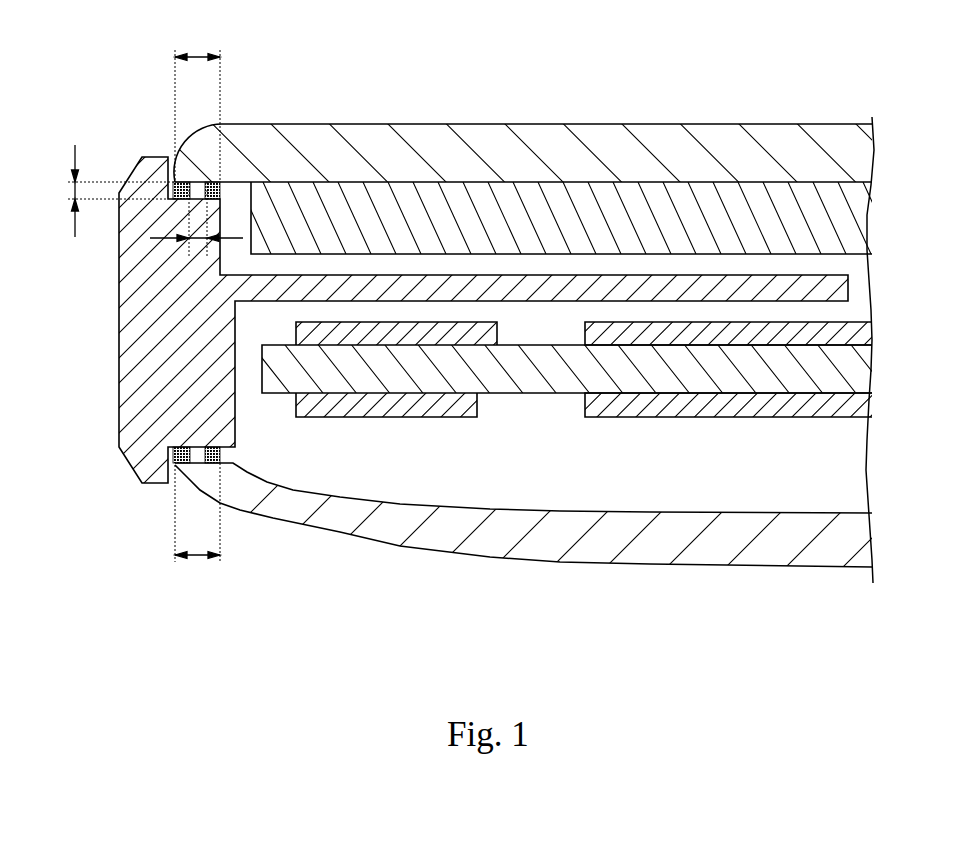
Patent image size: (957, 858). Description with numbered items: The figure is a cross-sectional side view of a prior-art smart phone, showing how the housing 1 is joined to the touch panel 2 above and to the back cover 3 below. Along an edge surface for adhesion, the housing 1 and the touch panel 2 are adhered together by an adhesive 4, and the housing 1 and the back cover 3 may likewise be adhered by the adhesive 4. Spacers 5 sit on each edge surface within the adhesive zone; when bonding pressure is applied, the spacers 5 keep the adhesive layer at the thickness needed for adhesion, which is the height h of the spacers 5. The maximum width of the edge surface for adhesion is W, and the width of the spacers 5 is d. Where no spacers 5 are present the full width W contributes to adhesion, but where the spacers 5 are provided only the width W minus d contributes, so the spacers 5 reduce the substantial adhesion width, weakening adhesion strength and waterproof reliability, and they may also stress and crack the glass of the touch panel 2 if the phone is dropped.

The housing 1 is at (132, 343).
The touch panel 2 is at (494, 142).
The back cover 3 is at (523, 543).
The adhesive 4 is at (210, 181).
The spacers 5 is at (206, 193).
The maximum width of the edge surface for adhesion W is at (197, 305).
The height of the spacers h is at (110, 191).
The width of the spacers d is at (198, 242).